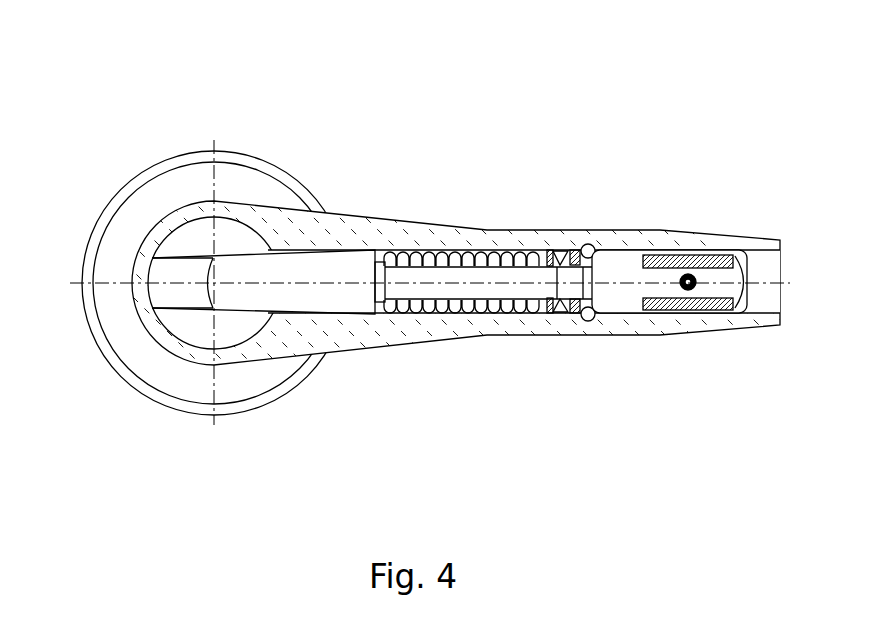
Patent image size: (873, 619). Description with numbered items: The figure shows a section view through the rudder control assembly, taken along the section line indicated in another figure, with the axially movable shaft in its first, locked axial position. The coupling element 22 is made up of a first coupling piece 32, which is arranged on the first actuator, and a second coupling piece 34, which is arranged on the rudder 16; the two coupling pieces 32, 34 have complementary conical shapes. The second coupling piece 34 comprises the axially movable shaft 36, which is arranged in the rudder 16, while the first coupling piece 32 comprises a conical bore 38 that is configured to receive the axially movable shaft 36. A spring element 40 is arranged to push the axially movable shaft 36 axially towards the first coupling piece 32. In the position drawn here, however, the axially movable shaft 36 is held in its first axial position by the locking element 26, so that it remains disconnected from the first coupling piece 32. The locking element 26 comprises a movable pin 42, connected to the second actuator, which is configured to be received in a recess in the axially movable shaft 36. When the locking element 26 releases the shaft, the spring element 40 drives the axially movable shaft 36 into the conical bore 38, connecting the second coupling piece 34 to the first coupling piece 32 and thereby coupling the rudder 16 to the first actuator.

The coupling element 22 is at (160, 178).
The conically bore 38 is at (193, 258).
The first coupling piece 32 is at (182, 310).
The axially movable shaft 36 is at (318, 250).
The second coupling piece 34 is at (372, 232).
The rudder 16 is at (440, 222).
The spring element 40 is at (487, 253).
The movable pin 42 is at (688, 278).
The locking element 26 is at (693, 287).